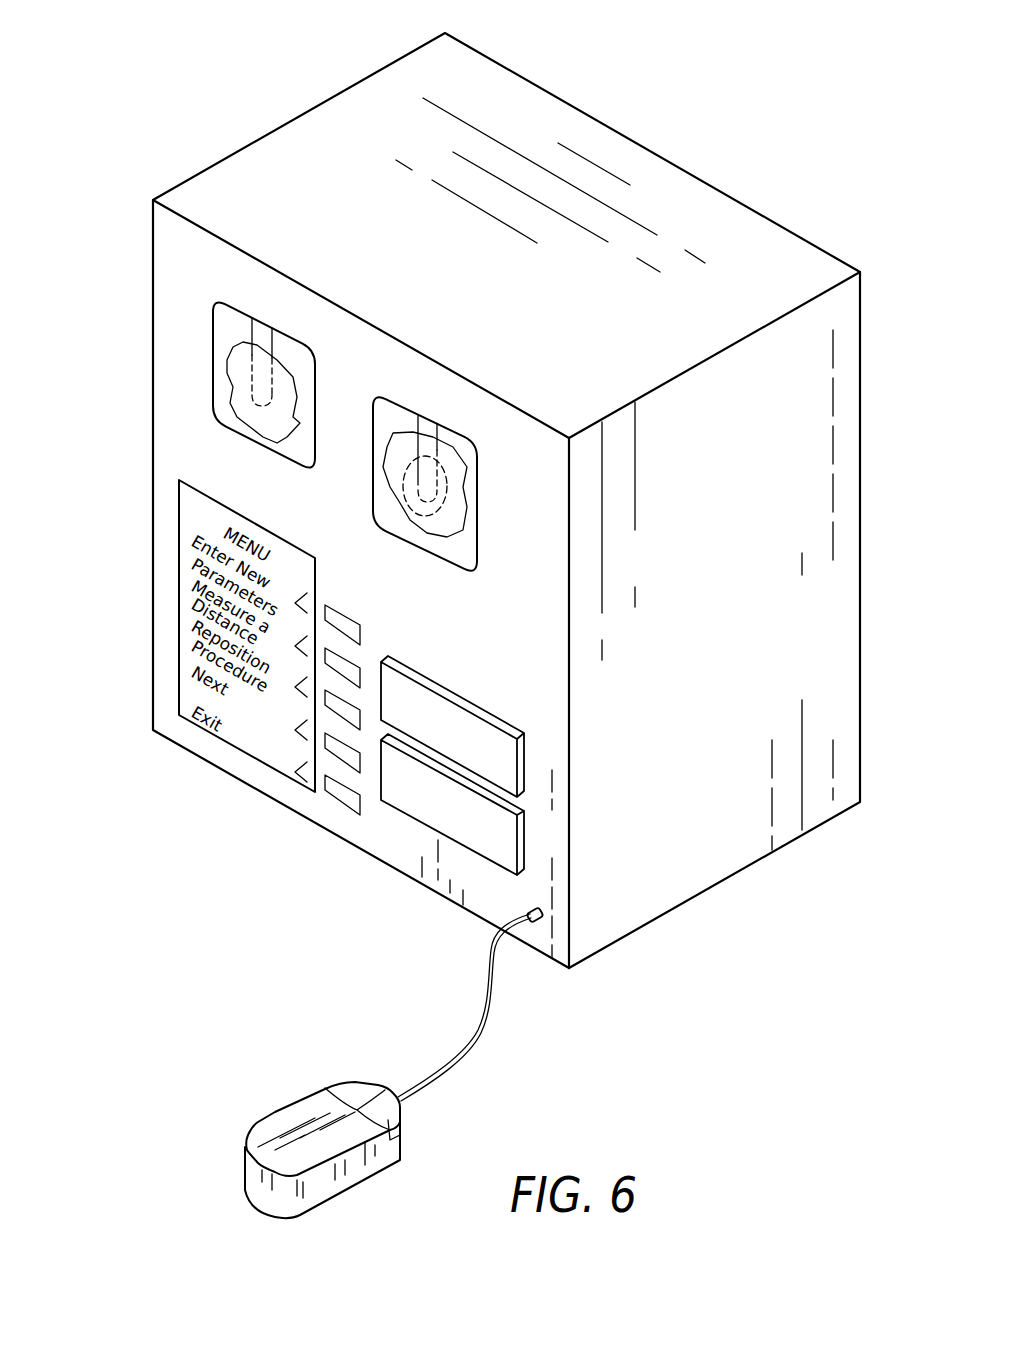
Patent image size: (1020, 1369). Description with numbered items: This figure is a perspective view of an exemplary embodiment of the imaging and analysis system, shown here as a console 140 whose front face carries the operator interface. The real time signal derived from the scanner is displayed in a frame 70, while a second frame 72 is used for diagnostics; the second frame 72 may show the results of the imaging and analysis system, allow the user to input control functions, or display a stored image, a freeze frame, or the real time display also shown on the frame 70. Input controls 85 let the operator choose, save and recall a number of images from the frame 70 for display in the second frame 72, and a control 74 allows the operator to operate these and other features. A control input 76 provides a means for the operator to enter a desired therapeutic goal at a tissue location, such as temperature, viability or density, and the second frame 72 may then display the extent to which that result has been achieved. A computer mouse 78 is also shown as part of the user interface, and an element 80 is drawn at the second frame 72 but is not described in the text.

The control console 140 is at (215, 855).
The frame 70 is at (290, 323).
The second frame 72 is at (453, 420).
The button slot 80 is at (437, 418).
The input controls 85 is at (535, 678).
The control 74 is at (522, 762).
The control input 76 is at (522, 840).
The computer mouse 78 is at (292, 1107).